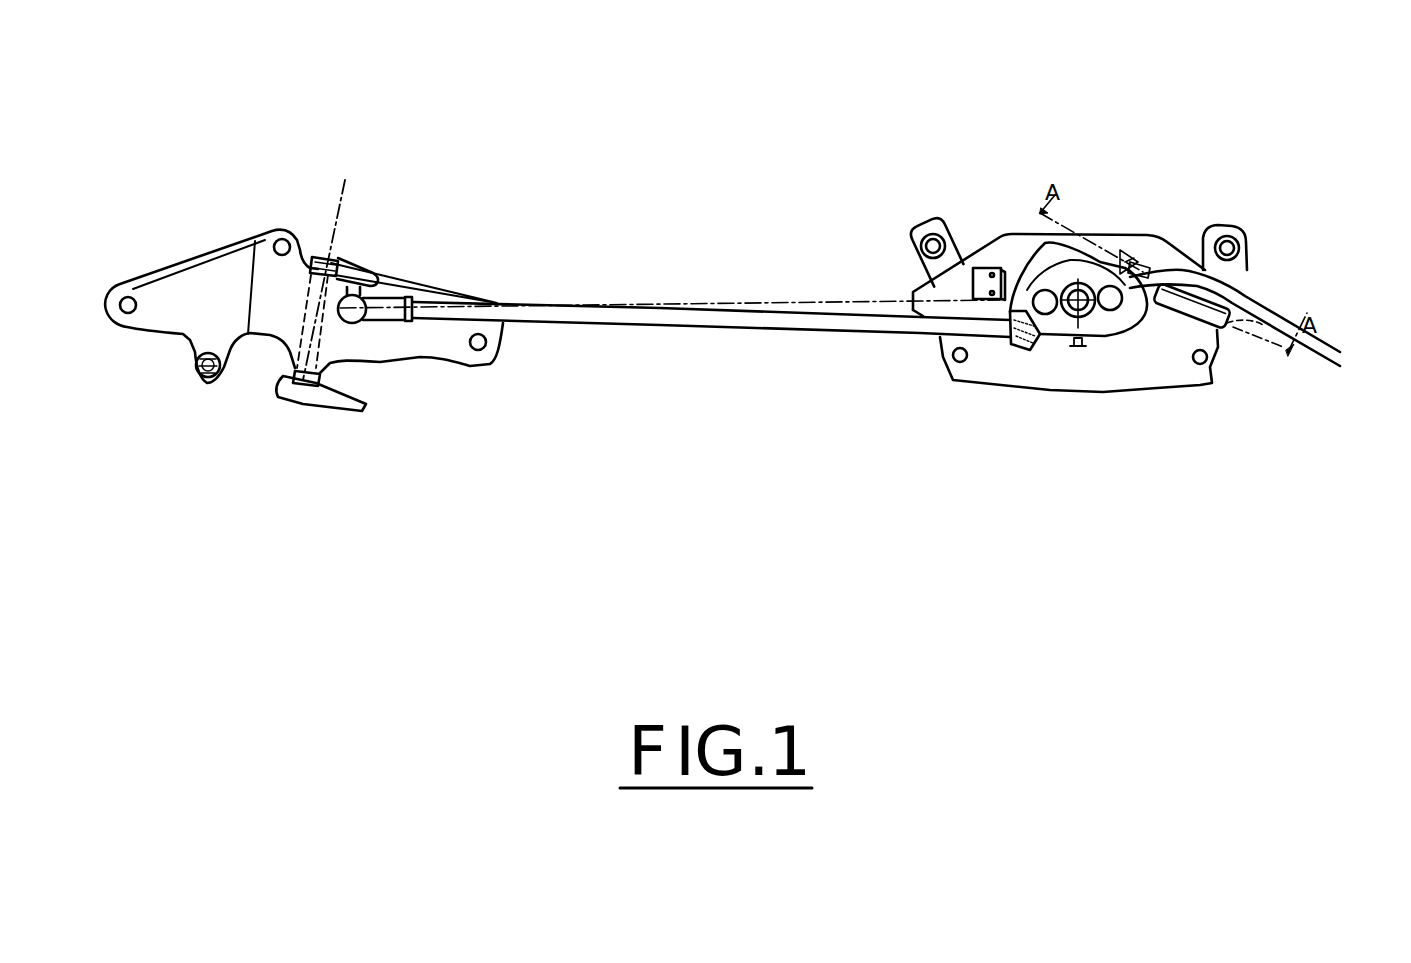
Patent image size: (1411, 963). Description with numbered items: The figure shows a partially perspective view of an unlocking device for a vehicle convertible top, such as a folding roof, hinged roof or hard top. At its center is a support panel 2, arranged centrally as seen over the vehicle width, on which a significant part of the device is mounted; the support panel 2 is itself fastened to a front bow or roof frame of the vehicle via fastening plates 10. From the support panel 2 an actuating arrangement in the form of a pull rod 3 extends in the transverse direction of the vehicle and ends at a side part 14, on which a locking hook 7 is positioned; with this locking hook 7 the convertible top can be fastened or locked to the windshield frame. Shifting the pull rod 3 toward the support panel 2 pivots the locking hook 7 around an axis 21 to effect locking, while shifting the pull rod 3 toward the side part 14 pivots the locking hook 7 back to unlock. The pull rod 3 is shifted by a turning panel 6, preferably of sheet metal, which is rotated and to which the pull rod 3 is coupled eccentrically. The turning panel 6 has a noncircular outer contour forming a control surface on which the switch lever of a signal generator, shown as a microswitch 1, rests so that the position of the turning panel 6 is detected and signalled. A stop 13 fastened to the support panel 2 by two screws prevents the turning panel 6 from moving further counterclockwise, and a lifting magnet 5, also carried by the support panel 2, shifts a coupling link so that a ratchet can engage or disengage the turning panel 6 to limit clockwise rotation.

The microswitch 1 is at (983, 270).
The support panel 2 is at (1115, 373).
The pull rods 3 is at (773, 320).
The lifting magnet 5 is at (1226, 328).
The turning panel 6 is at (1042, 265).
The locking hook 7 is at (315, 402).
The fastening plates 10 is at (1215, 230).
The stop 13 is at (975, 453).
The side part 14 is at (113, 455).
The axis 21 is at (437, 163).